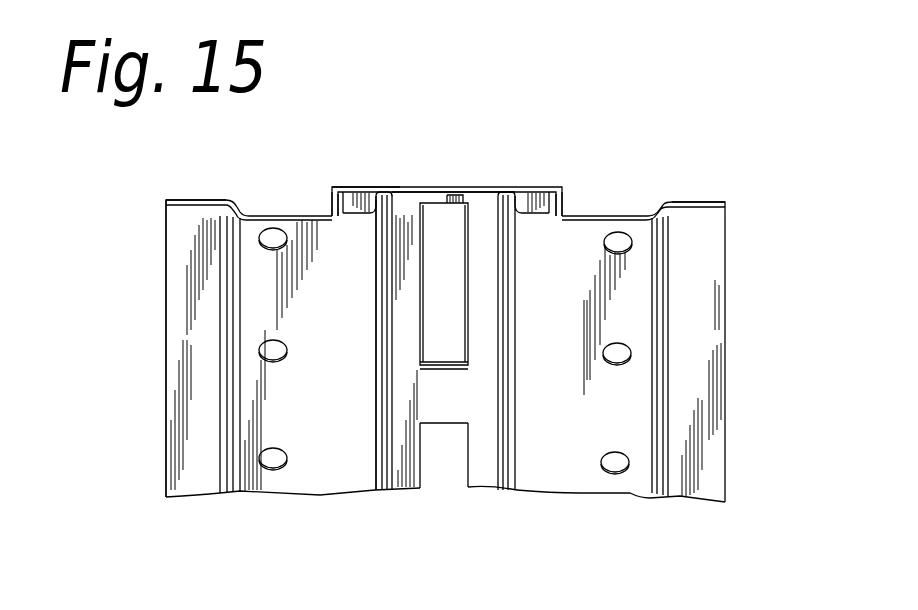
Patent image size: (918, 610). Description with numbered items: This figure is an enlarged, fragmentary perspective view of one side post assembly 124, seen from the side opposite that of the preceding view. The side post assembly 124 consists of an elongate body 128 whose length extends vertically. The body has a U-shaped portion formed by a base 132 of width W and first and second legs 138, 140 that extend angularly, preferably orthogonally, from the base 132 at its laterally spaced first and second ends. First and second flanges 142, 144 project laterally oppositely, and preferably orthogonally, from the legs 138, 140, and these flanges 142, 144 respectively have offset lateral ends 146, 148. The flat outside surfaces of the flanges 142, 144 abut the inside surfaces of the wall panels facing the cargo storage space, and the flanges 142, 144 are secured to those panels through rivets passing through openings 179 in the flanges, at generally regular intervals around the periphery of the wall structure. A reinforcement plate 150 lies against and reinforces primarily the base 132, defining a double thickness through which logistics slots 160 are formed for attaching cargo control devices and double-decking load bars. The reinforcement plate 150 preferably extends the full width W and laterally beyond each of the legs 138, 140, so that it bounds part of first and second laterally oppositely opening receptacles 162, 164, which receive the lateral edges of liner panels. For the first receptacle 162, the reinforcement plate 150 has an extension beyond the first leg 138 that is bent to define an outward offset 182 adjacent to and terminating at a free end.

The side post assembly 124 is at (517, 77).
The elongate body 128 is at (475, 213).
The base 132 is at (405, 205).
The first leg 138 is at (405, 250).
The second leg 140 is at (494, 285).
The first flange 142 is at (323, 243).
The second flange 144 is at (583, 223).
The offset lateral end 146 is at (180, 210).
The offset lateral end 148 is at (703, 220).
The reinforcement plate 150 is at (380, 205).
The logistics slots 160 is at (420, 445).
The first receptacle 162 is at (353, 207).
The second receptacle 164 is at (517, 202).
The openings 179 is at (267, 449).
The outward offset 182 is at (332, 188).